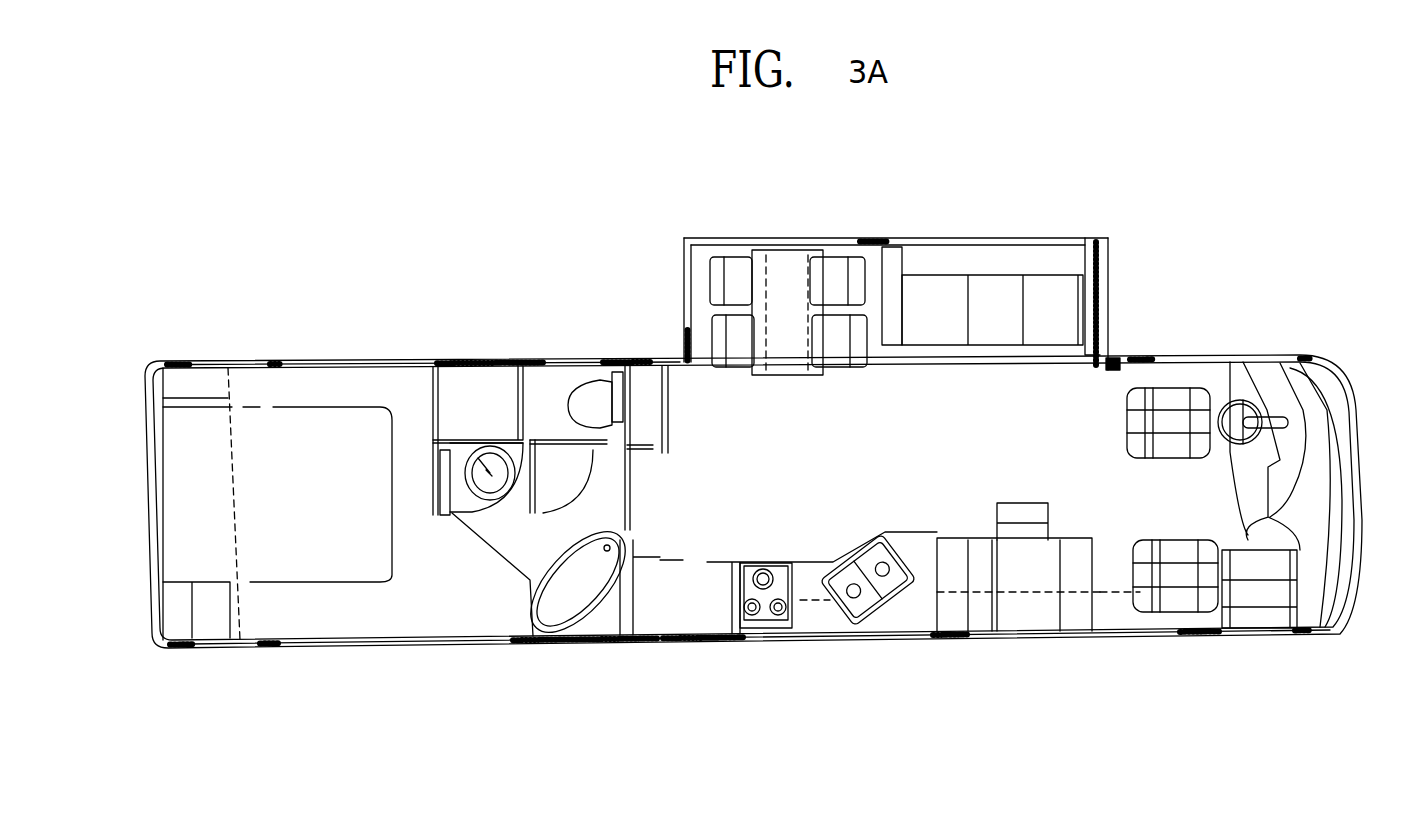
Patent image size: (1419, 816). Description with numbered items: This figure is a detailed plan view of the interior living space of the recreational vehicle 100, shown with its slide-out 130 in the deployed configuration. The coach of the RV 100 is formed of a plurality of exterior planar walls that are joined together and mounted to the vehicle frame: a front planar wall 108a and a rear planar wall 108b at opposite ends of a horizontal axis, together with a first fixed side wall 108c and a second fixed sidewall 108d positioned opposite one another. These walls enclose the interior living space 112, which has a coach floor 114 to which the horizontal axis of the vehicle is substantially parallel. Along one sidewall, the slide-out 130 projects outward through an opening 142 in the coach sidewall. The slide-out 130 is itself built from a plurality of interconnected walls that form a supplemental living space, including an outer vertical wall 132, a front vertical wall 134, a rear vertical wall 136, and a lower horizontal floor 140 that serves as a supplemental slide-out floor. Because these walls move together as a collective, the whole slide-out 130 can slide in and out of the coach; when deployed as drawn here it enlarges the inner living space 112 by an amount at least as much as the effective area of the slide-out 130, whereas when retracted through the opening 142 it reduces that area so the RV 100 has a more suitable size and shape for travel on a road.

The recreational vehicle 100 is at (1236, 196).
The front planar wall 108a is at (602, 643).
The rear planar wall 108b is at (143, 502).
The first fixed side wall 108c is at (1366, 542).
The second fixed sidewall 108d is at (458, 360).
The interior living space 112 is at (922, 447).
The coach floor 114 is at (727, 522).
The slide-out 130 is at (918, 245).
The outer vertical wall 132 is at (708, 243).
The front vertical wall 134 is at (1108, 245).
The rear vertical wall 136 is at (660, 245).
The lower horizontal floor 140 is at (862, 243).
The opening 142 is at (1112, 335).